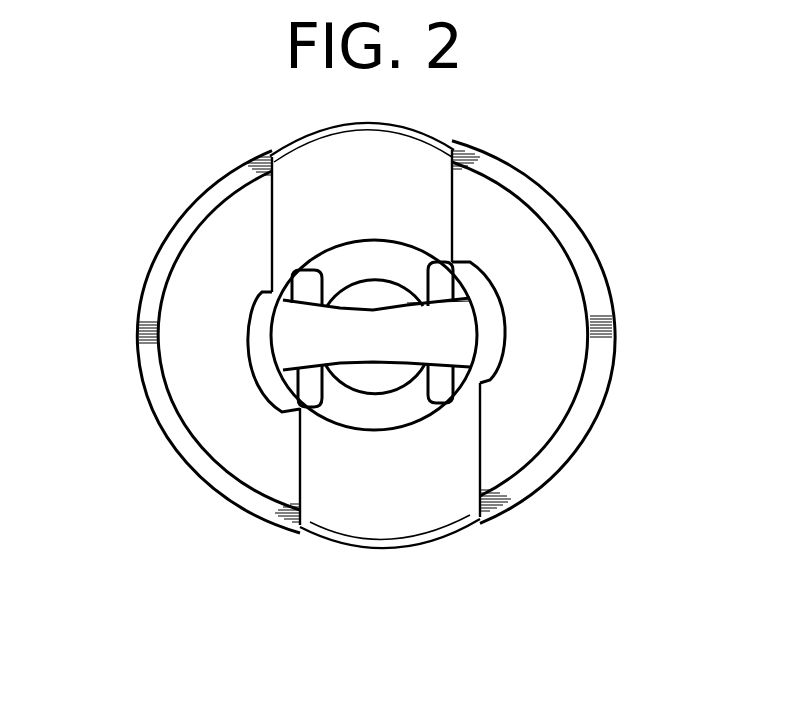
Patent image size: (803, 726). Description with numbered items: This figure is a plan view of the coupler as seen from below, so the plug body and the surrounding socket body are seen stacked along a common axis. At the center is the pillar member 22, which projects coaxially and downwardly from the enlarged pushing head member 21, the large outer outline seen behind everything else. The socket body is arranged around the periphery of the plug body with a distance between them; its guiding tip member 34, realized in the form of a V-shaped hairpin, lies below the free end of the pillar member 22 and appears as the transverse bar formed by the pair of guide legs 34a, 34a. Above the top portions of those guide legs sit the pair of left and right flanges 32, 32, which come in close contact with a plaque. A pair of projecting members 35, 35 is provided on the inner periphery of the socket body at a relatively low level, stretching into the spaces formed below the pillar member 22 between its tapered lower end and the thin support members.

The pushing head member 21 is at (424, 127).
The flange 32 is at (600, 291).
The pillar member 22 is at (366, 393).
The guiding tip member 34 is at (410, 352).
The guide leg 34a is at (302, 339).
The projecting member 35 is at (302, 383).